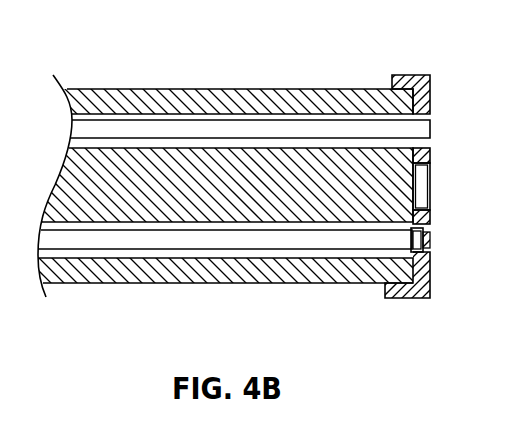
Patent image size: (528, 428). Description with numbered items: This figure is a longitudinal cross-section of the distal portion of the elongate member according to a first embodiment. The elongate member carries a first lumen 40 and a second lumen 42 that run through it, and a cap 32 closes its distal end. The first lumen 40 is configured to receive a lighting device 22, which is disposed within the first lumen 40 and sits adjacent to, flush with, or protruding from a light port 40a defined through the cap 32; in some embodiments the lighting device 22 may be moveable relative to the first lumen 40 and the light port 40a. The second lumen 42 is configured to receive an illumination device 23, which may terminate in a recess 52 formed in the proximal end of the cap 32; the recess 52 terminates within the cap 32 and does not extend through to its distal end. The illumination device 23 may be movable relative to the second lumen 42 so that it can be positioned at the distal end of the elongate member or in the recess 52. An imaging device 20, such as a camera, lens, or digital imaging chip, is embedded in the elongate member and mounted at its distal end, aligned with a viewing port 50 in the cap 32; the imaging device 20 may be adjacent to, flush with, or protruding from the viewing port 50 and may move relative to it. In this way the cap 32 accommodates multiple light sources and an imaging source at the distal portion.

The first lumen 40 is at (298, 120).
The light port 40a is at (432, 149).
The lighting device 22 is at (340, 122).
The illumination device 23 is at (362, 242).
The cap 32 is at (432, 86).
The imaging device 20 is at (432, 186).
The viewing port 50 is at (432, 208).
The recess 52 is at (432, 239).
The second lumen 42 is at (310, 255).